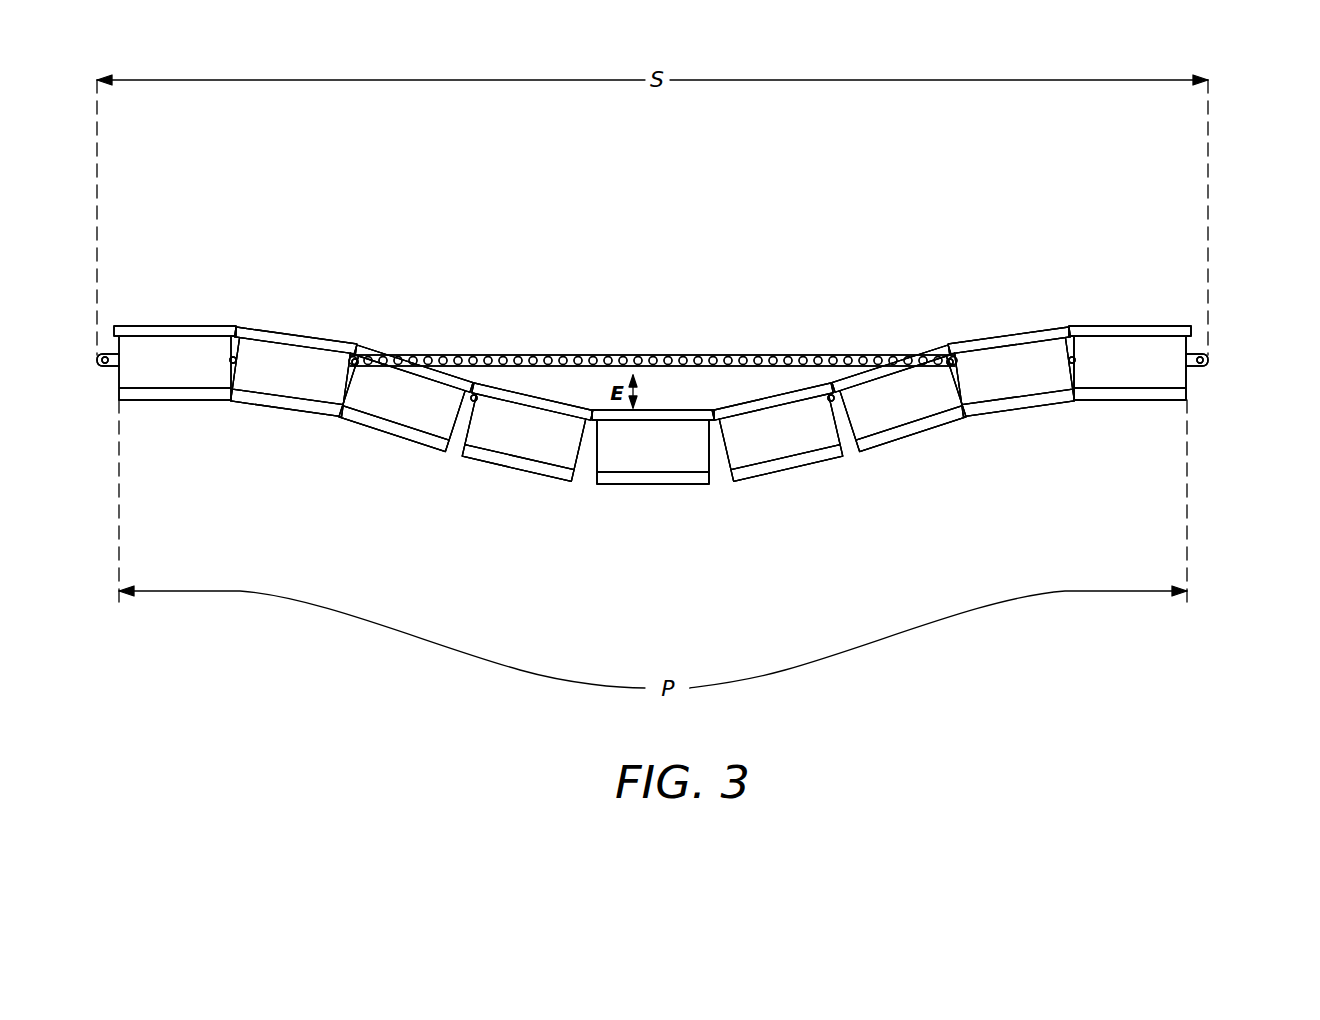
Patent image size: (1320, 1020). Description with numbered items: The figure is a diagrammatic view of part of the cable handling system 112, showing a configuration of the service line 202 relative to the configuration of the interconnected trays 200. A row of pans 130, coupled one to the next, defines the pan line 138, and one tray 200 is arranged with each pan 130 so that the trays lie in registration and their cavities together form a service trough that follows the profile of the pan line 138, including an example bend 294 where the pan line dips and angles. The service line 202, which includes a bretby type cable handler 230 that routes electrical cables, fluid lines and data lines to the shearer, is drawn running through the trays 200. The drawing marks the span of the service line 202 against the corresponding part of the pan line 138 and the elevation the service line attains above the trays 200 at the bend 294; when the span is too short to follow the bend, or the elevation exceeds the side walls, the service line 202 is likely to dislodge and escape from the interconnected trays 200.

The cable handling system 112 is at (1248, 266).
The pan 130 is at (183, 400).
The pan line 138 is at (1158, 405).
The interconnected trays 200 is at (279, 330).
The service line 202 is at (592, 350).
The cable handler 230 is at (650, 357).
The bend 294 is at (630, 485).